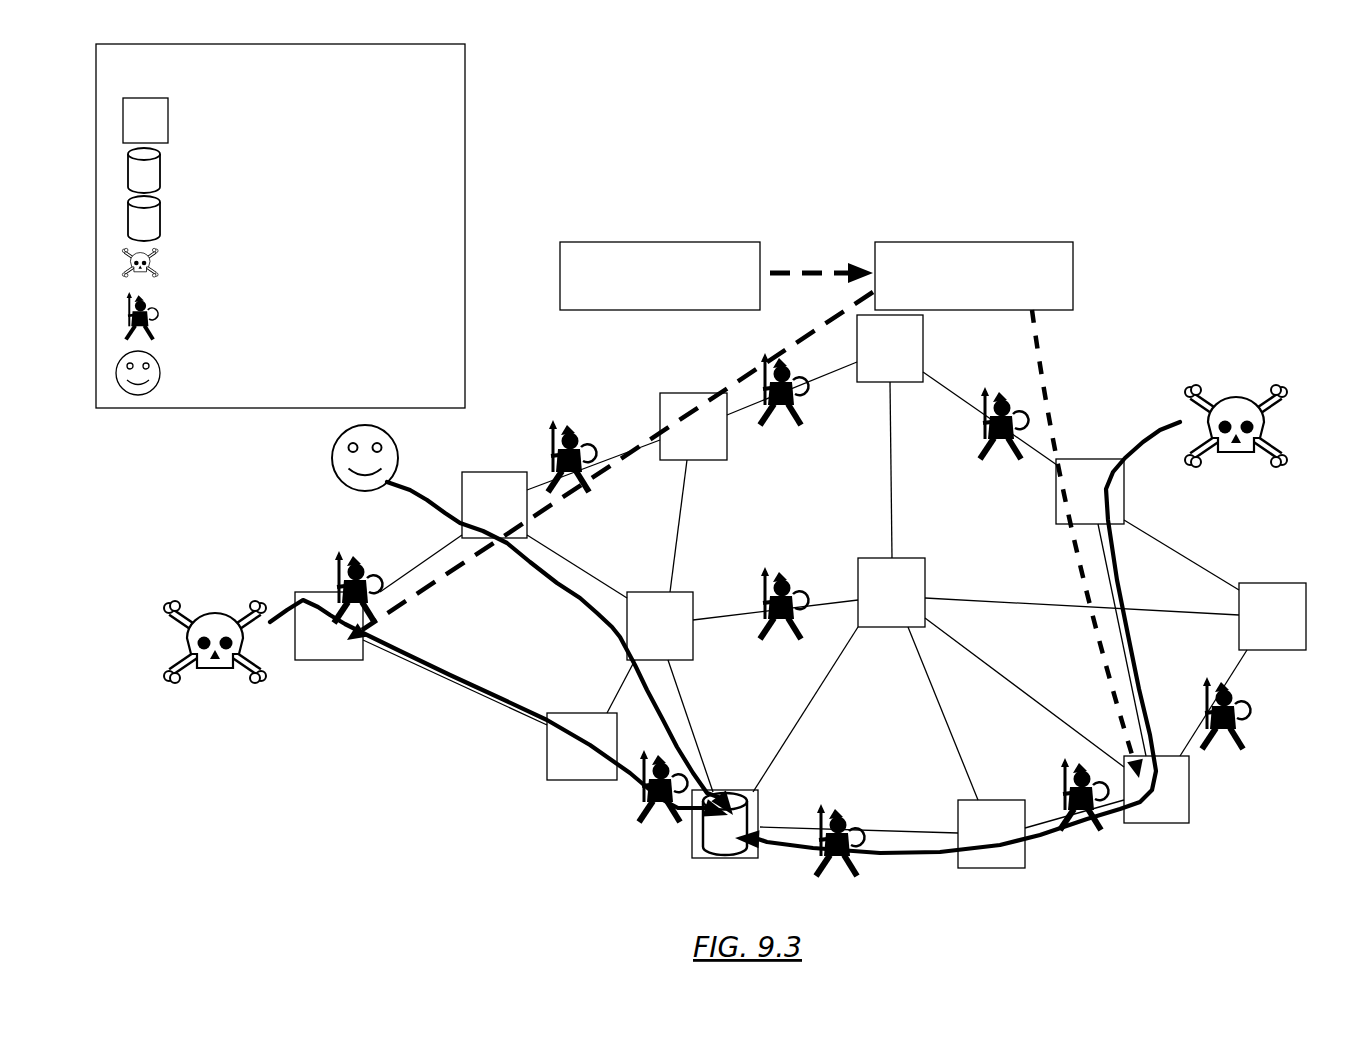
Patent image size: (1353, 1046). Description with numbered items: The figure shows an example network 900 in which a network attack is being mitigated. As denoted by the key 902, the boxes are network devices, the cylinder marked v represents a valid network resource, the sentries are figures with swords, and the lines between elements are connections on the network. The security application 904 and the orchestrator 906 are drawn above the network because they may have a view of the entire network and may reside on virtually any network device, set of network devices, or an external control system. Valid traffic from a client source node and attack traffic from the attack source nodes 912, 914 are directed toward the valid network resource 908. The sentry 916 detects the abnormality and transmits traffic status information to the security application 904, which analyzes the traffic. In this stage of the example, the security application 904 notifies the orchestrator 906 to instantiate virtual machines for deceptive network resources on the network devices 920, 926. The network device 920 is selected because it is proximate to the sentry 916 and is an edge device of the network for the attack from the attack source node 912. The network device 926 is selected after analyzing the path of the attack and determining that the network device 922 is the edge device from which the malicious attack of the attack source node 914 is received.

The network 900 is at (788, 492).
The key 902 is at (323, 225).
The security application 904 is at (660, 276).
The orchestrator 906 is at (974, 276).
The valid network resource 908 is at (680, 838).
The attack source node 912 is at (200, 603).
The attack source node 914 is at (1240, 399).
The sentry 916 is at (322, 568).
The network device 920 is at (354, 680).
The network device 922 is at (1088, 440).
The network device 926 is at (1194, 810).